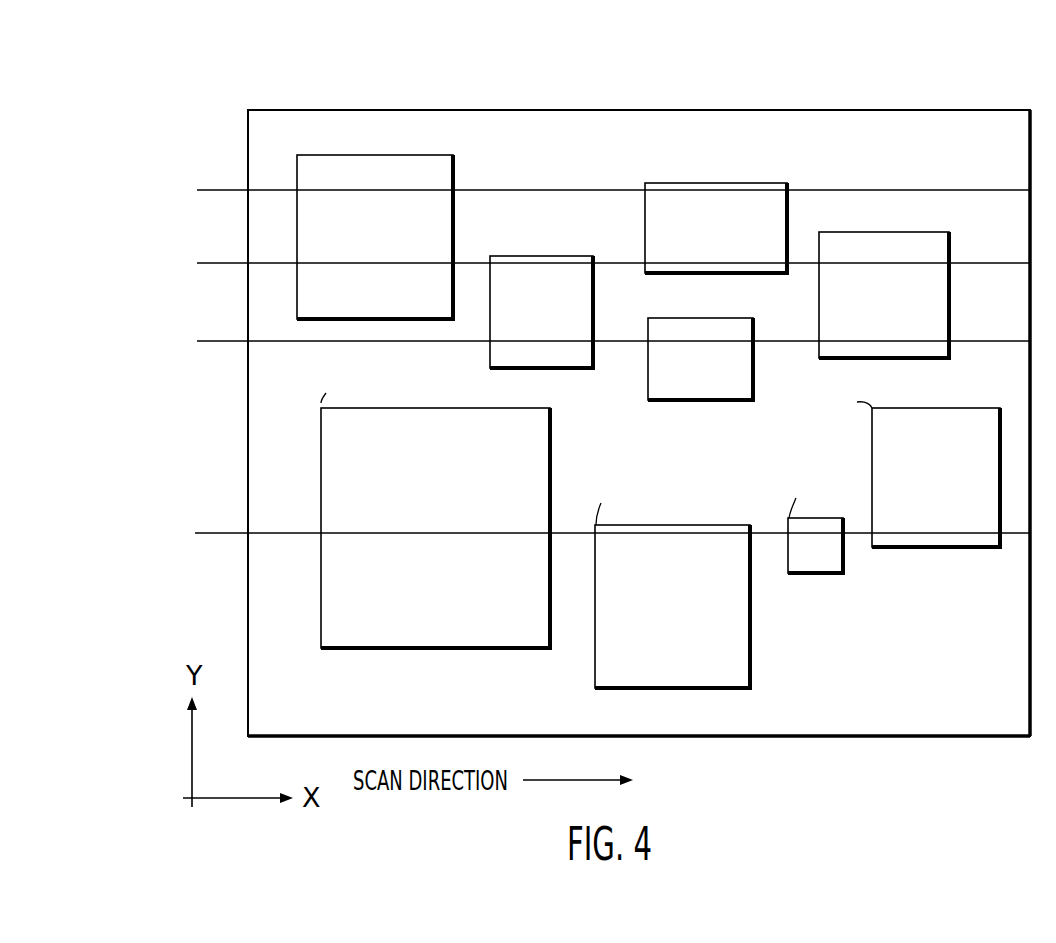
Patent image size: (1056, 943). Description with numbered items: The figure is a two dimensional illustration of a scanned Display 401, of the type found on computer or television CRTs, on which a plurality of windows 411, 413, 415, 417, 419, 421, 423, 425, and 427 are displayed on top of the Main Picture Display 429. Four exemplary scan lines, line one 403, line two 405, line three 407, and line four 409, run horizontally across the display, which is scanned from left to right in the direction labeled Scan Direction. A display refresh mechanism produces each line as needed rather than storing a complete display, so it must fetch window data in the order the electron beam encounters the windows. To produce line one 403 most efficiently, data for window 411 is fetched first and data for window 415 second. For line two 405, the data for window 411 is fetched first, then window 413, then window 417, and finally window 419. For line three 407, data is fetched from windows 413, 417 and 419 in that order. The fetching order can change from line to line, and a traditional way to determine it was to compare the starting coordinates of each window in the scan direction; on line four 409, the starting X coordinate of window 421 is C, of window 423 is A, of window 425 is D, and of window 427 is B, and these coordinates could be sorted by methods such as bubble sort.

The scanned Display 401 is at (582, 110).
The scan line 1 403 is at (207, 190).
The scan line 2 405 is at (207, 263).
The scan line 3 407 is at (207, 341).
The scan line 4 409 is at (208, 532).
The window 411 is at (375, 237).
The window 413 is at (541, 312).
The window 415 is at (716, 228).
The window 417 is at (700, 359).
The window 419 is at (884, 295).
The window 421 is at (435, 502).
The window 423 is at (670, 580).
The window 425 is at (815, 520).
The window 427 is at (919, 465).
The Main Picture Display 429 is at (888, 705).